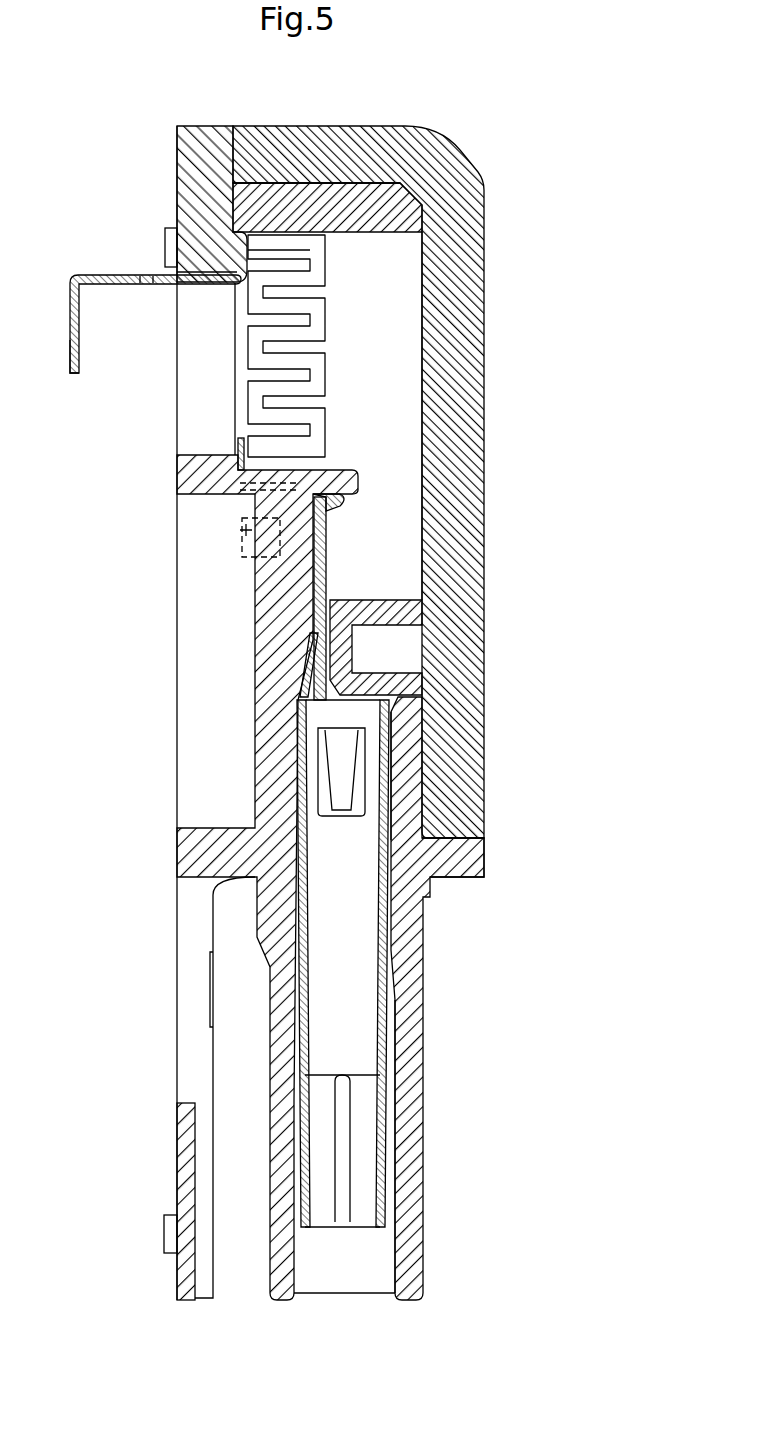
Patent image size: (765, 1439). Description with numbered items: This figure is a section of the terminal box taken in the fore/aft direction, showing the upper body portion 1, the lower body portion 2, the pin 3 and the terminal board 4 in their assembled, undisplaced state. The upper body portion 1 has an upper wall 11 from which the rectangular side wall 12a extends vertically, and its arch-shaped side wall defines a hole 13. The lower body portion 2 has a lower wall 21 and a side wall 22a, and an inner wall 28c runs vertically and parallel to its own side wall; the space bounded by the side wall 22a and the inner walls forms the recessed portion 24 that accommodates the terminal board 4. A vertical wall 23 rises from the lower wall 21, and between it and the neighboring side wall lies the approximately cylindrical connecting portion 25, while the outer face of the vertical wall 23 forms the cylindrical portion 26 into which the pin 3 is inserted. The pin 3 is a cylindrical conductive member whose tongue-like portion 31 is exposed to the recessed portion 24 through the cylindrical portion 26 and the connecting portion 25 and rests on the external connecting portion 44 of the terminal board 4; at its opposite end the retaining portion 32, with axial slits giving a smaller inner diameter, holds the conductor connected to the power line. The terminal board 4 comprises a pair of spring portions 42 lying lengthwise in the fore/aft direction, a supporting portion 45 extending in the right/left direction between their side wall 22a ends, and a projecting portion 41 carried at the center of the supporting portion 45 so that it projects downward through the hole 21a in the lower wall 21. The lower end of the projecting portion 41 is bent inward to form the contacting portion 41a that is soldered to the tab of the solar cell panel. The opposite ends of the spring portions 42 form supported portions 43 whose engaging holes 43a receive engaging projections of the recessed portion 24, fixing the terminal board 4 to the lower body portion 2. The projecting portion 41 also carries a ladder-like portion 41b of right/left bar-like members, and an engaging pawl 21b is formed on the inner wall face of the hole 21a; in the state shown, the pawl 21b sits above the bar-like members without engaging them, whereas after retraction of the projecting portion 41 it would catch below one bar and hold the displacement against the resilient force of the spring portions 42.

The upper body portion 1 is at (458, 140).
The lower body portion 2 is at (173, 146).
The pin 3 is at (398, 986).
The terminal board 4 is at (340, 327).
The upper wall 11 is at (476, 497).
The side wall 12a is at (352, 134).
The hole 13 is at (400, 779).
The lower wall 21 is at (206, 137).
The hole 21a is at (193, 380).
The engaging pawl 21b is at (186, 288).
The side wall 22a is at (335, 178).
The vertical wall 23 is at (478, 860).
The recessed portion 24 is at (360, 413).
The connecting portion 25 is at (415, 722).
The cylindrical portion 26 is at (408, 1070).
The inner wall 28c is at (405, 611).
The tongue-like portion 31 is at (330, 590).
The retaining portion 32 is at (363, 1222).
The projecting portion 41 is at (95, 268).
The contacting portion 41a is at (72, 357).
The ladder-like portion 41b is at (178, 284).
The spring portion 42 is at (320, 353).
The supported portion 43 is at (255, 558).
The engaging hole 43a is at (245, 530).
The external connecting portion 44 is at (336, 507).
The supporting portion 45 is at (268, 250).